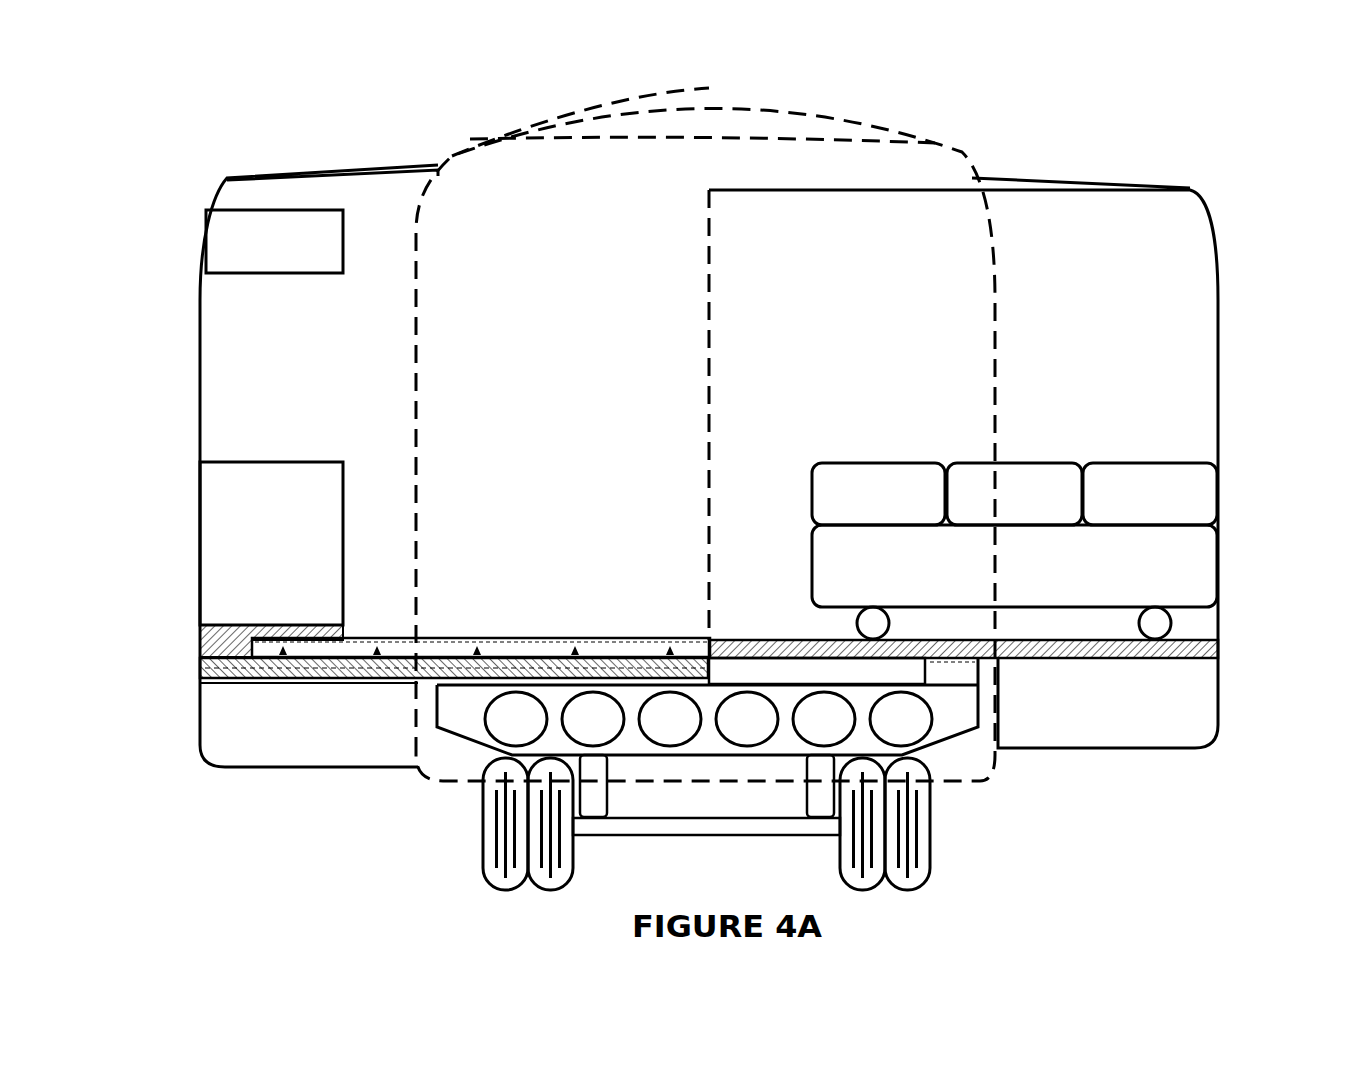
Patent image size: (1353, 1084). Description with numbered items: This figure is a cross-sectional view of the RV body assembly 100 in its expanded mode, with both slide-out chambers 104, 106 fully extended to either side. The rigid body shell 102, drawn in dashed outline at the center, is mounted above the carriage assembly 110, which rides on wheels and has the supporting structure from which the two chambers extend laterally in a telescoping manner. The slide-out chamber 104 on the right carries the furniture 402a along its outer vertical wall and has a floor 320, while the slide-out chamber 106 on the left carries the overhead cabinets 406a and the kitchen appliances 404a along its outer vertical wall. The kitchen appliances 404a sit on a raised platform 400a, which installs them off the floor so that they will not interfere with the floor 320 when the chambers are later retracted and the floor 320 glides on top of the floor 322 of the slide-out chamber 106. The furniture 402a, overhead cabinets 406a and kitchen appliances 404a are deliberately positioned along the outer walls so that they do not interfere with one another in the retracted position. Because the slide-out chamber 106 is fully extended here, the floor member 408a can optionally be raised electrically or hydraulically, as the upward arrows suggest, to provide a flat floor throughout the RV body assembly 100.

The RV body structure 100 is at (997, 147).
The rigid body shell 102 is at (455, 150).
The slide-out chamber 104 is at (1165, 365).
The slide-out chamber 106 is at (216, 392).
The carriage assembly 110 is at (470, 760).
The floor 320 is at (1185, 650).
The floor 322 is at (203, 668).
The raised platform 400a is at (228, 640).
The furniture 402a is at (1170, 565).
The kitchen appliances 404a is at (228, 516).
The overhead cabinets 406a is at (225, 246).
The floor member 408a is at (558, 638).